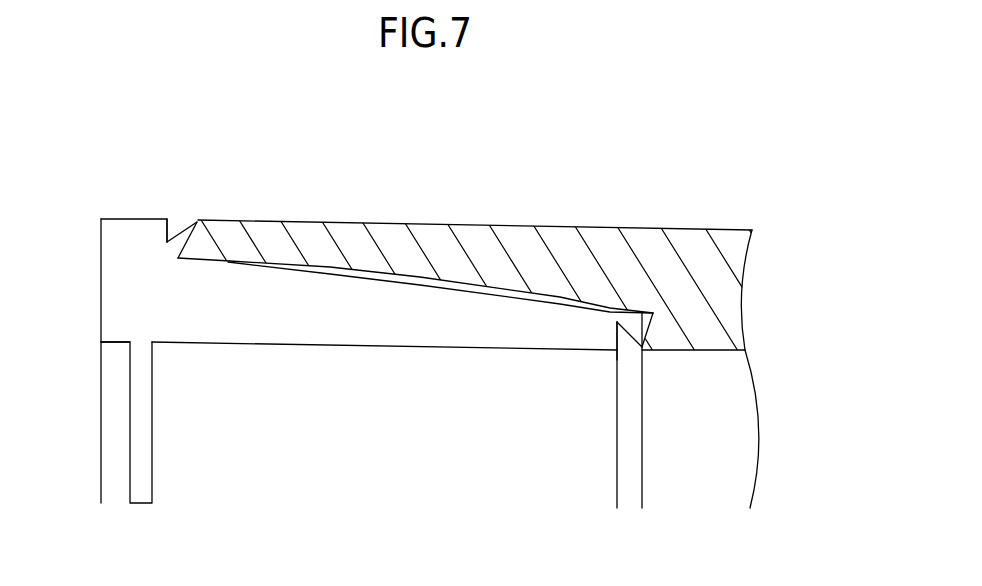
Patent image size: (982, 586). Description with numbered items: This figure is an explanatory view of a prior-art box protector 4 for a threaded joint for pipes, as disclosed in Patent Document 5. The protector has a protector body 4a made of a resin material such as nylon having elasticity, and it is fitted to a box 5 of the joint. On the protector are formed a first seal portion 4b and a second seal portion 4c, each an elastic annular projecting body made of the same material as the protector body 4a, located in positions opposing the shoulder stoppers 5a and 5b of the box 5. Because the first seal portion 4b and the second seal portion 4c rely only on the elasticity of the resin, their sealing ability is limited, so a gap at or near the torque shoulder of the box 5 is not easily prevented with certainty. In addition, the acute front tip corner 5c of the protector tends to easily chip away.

The box protector 4 is at (424, 358).
The protector body 4a is at (328, 336).
The first seal portion 4b is at (178, 238).
The second seal portion 4c is at (630, 333).
The box 5 is at (347, 228).
The shoulder stopper 5a is at (178, 247).
The shoulder stopper 5b is at (657, 327).
The acute front tip corner 5c is at (642, 312).